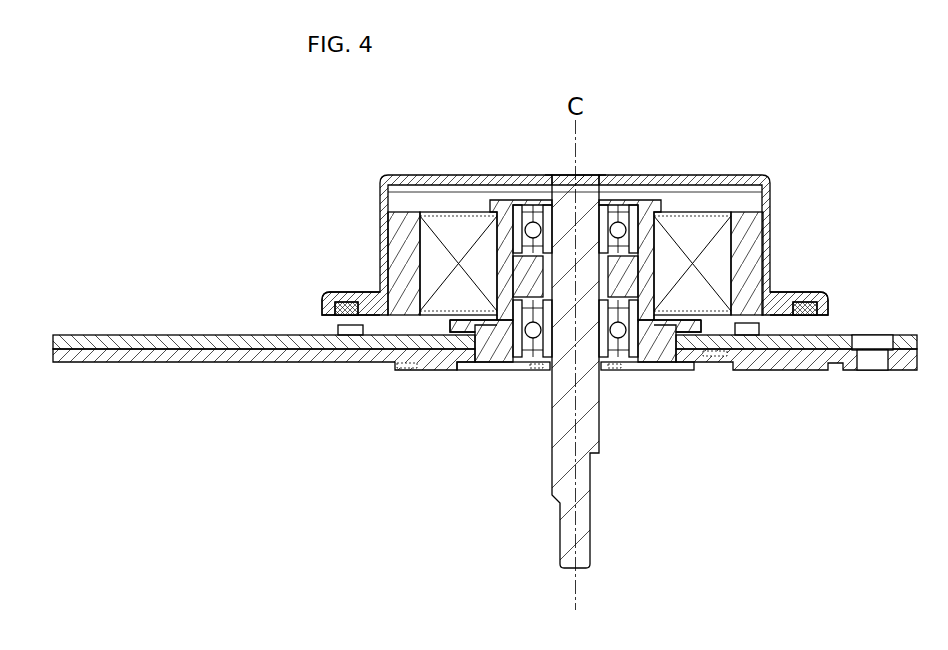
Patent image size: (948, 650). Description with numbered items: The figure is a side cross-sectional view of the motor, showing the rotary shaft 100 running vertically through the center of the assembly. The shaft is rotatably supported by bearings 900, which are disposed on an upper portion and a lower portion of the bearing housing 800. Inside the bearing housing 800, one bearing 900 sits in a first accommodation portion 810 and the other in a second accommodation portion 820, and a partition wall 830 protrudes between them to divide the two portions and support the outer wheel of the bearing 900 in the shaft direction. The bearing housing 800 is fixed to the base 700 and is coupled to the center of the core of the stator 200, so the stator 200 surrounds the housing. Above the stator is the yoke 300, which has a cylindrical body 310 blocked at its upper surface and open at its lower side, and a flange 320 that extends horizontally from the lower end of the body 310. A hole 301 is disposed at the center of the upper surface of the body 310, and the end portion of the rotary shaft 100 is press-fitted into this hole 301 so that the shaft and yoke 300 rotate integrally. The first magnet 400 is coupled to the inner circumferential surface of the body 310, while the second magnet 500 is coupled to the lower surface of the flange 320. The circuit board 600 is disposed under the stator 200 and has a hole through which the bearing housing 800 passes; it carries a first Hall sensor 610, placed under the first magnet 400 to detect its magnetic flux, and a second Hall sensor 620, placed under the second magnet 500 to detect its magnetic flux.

The rotary shaft 100 is at (591, 173).
The stator 200 is at (699, 211).
The yoke 300 is at (480, 172).
The hole 301 is at (556, 173).
The body 310 is at (778, 192).
The flange 320 is at (330, 292).
The first magnet 400 is at (749, 211).
The second magnet 500 is at (348, 300).
The circuit board 600 is at (82, 333).
The first Hall sensor 610 is at (746, 333).
The second Hall sensor 620 is at (338, 330).
The base 700 is at (212, 366).
The bearing housing 800 is at (489, 336).
The first accommodation portion 810 is at (503, 229).
The second accommodation portion 820 is at (513, 341).
The partition wall 830 is at (537, 277).
The bearing 900 is at (630, 206).